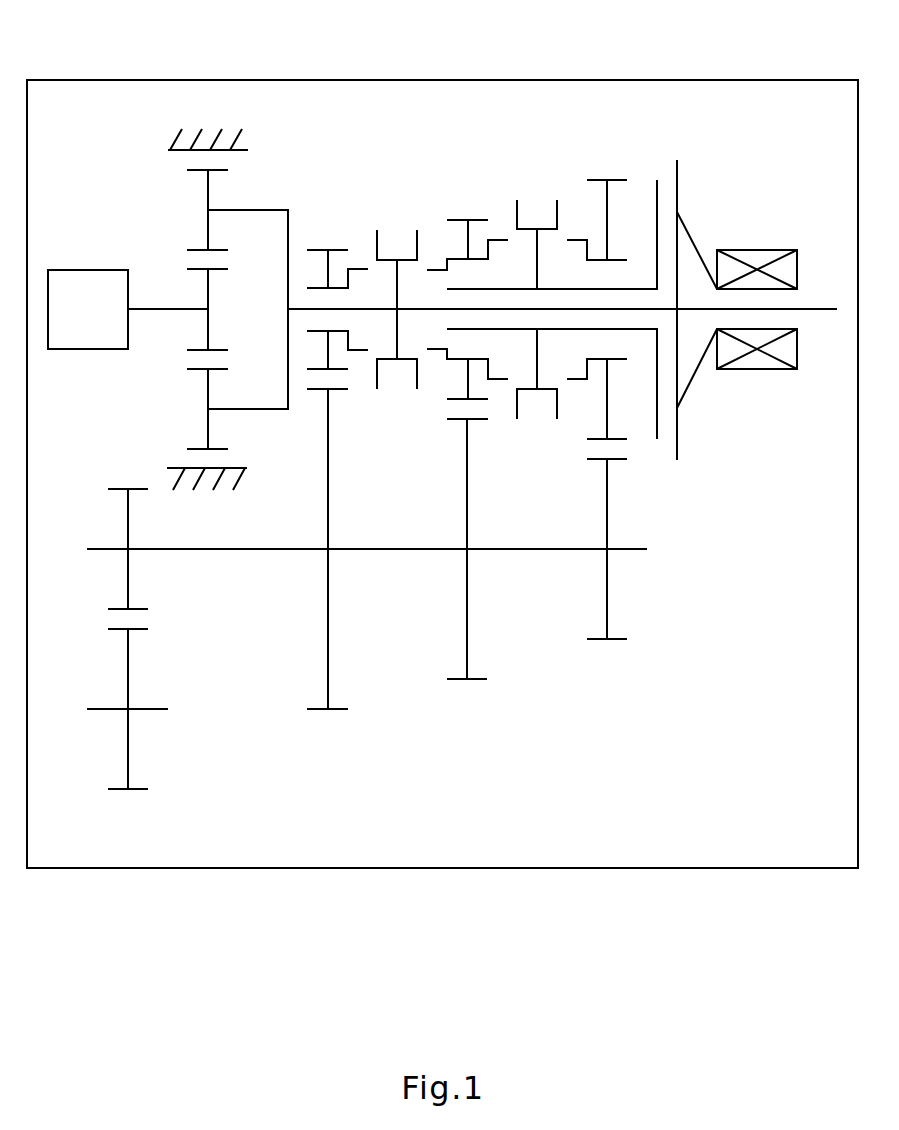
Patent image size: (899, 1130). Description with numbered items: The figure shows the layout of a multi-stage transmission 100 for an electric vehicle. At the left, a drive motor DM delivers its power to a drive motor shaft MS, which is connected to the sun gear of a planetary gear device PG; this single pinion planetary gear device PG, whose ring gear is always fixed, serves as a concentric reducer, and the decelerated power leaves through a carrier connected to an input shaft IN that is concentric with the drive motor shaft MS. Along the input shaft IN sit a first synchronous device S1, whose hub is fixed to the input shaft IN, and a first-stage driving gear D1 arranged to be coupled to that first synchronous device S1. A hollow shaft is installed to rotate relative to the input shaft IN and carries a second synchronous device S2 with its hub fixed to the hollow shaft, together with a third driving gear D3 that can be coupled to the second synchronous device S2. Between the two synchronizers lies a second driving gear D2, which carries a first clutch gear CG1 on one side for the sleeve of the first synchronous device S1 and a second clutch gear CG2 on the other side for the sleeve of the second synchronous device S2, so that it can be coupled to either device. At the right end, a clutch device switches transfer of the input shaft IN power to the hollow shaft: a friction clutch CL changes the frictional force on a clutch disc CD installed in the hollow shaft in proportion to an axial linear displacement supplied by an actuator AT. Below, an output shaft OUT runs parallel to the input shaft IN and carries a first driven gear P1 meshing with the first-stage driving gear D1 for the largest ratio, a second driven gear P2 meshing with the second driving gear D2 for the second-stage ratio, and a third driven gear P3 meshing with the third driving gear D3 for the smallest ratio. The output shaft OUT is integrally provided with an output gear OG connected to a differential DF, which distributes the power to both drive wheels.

The multi-stage transmission 100 is at (442, 80).
The drive motor DM is at (88, 309).
The drive motor shaft MS is at (148, 305).
The planetary gear device PG is at (170, 174).
The input shaft IN is at (816, 308).
The first-stage driving gear D1 is at (327, 248).
The first synchronous device S1 is at (390, 242).
The first clutch gear CG1 is at (430, 265).
The second clutch gear CG2 is at (493, 240).
The second driving gear D2 is at (468, 218).
The clutch disc CD is at (655, 427).
The second synchronous device S2 is at (553, 211).
The third driving gear D3 is at (608, 178).
The friction clutch CL is at (666, 166).
The actuator AT is at (756, 250).
The output shaft OUT is at (630, 552).
The first driven gear P1 is at (328, 712).
The second driven gear P2 is at (467, 681).
The third driven gear P3 is at (607, 642).
The output gear OG is at (128, 487).
The differential DF is at (128, 791).